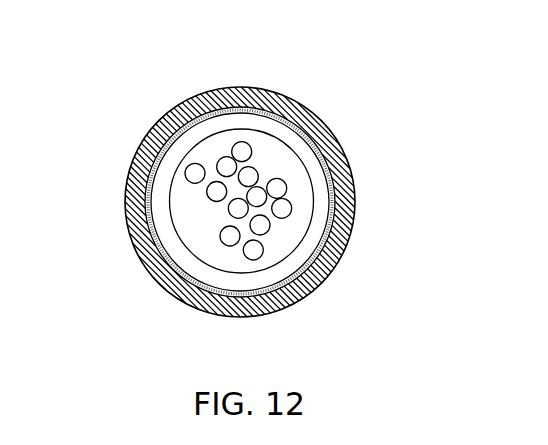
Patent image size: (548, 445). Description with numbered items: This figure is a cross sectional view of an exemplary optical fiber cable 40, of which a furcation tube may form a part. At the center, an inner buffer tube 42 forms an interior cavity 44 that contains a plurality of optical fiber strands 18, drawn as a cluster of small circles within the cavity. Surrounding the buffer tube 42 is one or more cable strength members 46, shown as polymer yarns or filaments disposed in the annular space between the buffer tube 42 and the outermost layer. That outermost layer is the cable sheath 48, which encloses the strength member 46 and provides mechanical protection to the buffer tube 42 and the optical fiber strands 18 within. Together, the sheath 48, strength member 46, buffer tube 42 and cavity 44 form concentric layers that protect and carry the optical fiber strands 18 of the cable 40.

The cable 40 is at (150, 101).
The cable sheath 48 is at (348, 157).
The cable strength member 46 is at (165, 281).
The inner buffer tube 42 is at (310, 245).
The interior cavity 44 is at (270, 158).
The optical fiber strands 18 is at (191, 176).